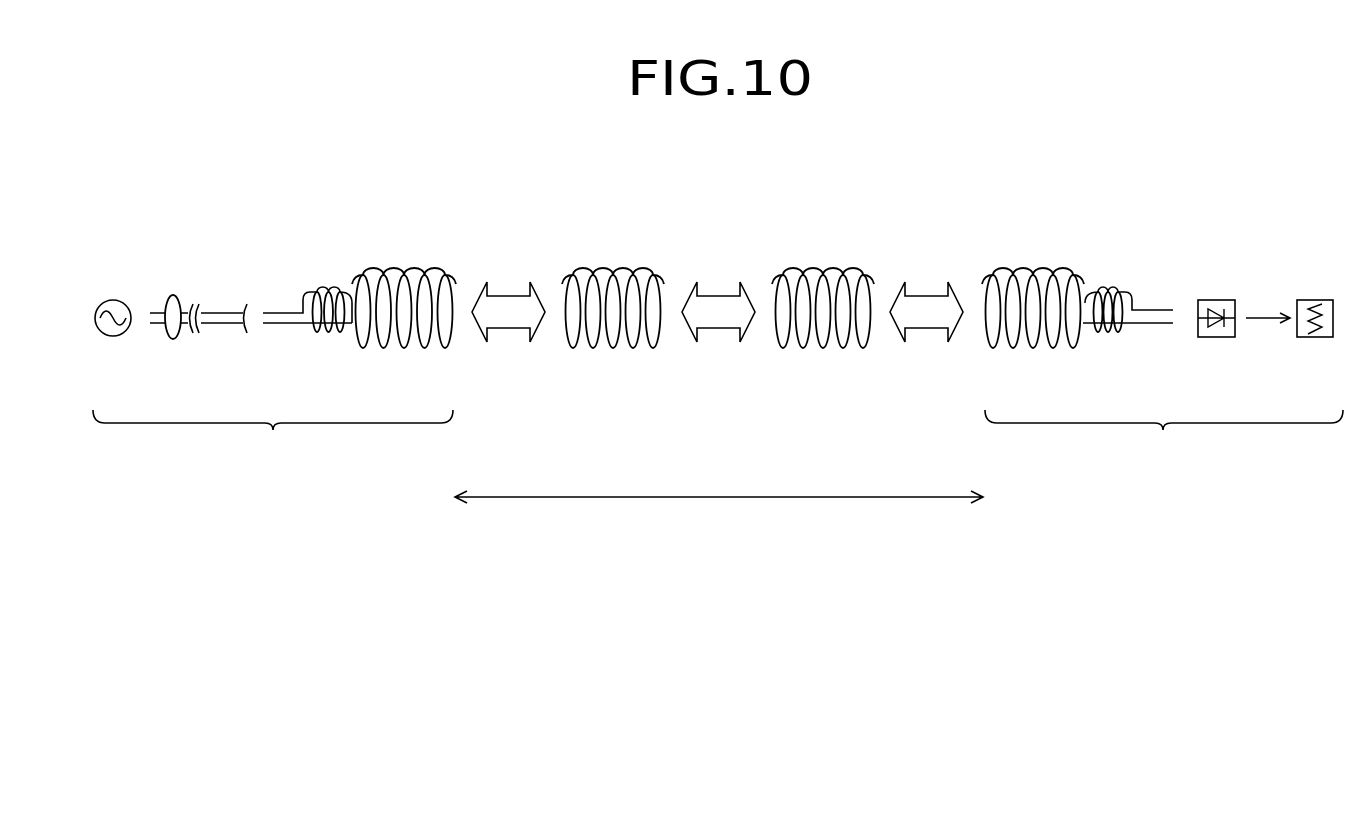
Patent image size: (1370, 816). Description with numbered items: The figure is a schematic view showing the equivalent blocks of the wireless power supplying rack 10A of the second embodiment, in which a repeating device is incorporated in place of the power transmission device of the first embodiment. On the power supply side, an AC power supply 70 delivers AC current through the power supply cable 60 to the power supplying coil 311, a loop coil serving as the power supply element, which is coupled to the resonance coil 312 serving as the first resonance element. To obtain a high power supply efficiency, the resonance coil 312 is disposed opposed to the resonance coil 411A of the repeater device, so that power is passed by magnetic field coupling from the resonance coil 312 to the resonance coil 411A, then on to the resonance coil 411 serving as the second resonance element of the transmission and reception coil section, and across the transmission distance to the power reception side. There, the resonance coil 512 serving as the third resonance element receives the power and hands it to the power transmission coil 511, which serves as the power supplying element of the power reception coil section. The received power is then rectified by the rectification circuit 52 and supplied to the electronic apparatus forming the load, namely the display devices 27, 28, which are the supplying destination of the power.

The wireless power supplying rack 10A is at (697, 153).
The AC power supply 70 is at (113, 300).
The power supply cable 60 is at (214, 312).
The power supplying coil 311 is at (318, 334).
The resonance coil 312 is at (405, 350).
The resonance coil 411A is at (614, 350).
The resonance coil 411 is at (823, 350).
The resonance coil 512 is at (1033, 350).
The power transmission coil 511 is at (1120, 334).
The rectification circuit 52 is at (1217, 300).
The display device 27 is at (1311, 300).
The display device 28 is at (1315, 318).